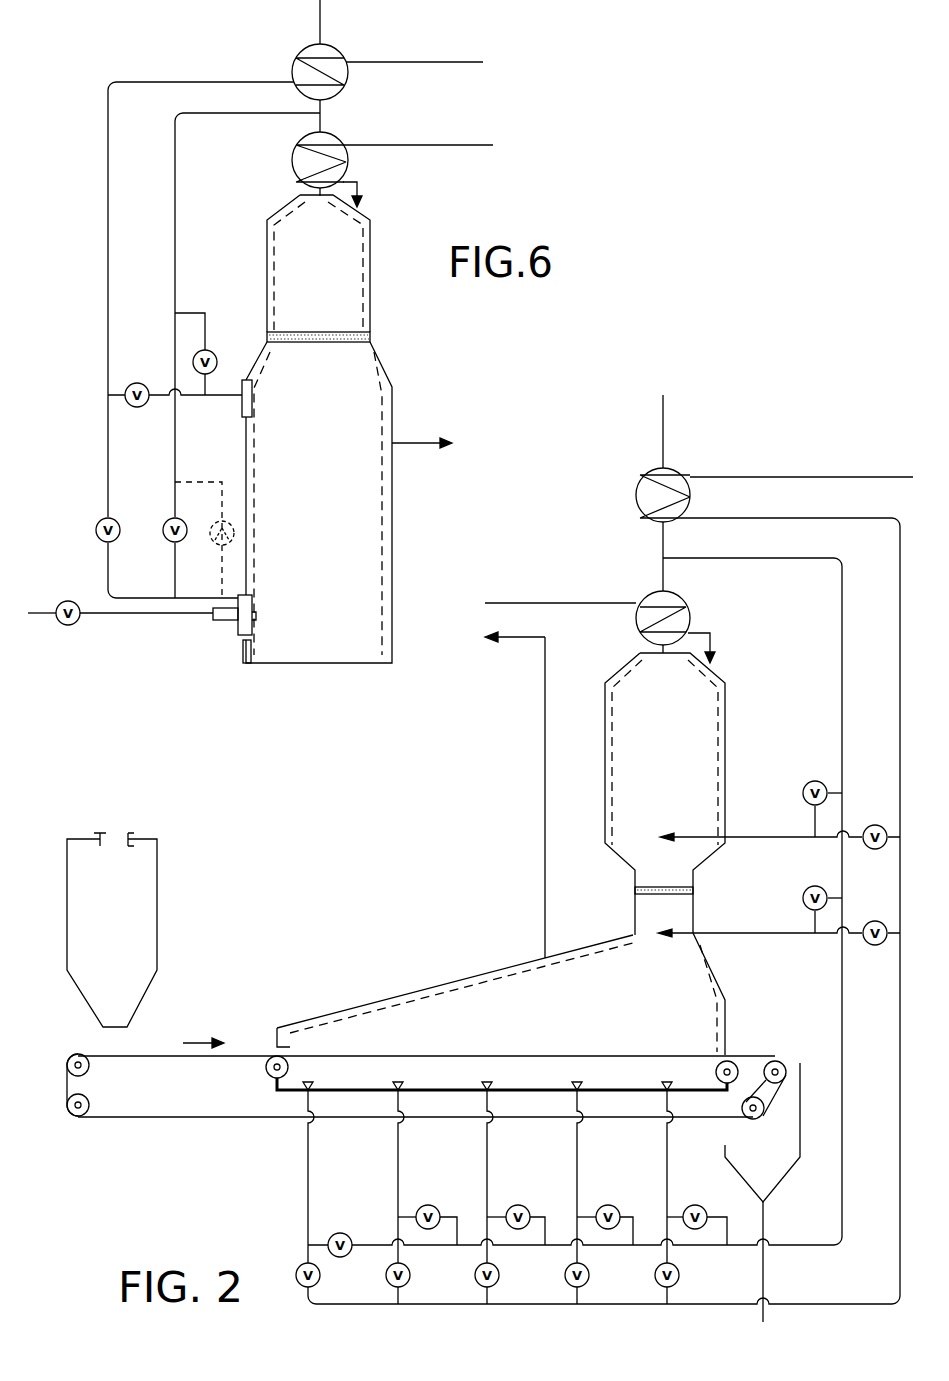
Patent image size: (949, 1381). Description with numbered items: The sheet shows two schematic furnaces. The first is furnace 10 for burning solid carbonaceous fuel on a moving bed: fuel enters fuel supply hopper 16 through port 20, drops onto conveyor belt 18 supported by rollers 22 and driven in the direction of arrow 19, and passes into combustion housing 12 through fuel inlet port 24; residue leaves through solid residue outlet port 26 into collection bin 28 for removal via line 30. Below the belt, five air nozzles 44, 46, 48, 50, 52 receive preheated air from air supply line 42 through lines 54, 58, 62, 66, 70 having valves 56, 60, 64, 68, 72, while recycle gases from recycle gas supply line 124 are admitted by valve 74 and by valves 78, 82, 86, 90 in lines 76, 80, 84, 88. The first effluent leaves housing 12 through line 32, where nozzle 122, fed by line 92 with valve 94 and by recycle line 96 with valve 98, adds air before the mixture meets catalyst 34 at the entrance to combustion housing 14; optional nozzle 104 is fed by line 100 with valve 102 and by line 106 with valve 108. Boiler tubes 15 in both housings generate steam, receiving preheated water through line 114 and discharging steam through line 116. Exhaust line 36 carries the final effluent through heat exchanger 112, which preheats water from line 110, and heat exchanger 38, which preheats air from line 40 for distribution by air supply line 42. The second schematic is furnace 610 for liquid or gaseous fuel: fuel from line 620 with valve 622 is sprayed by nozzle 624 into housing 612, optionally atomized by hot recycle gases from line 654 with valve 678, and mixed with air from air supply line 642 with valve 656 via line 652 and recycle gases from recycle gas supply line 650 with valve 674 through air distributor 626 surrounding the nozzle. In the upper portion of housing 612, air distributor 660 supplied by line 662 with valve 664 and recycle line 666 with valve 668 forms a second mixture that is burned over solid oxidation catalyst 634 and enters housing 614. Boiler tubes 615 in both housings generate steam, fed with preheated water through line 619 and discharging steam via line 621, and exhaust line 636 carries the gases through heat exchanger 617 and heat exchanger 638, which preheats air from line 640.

In FIG. 6, the furnace 610 is at (455, 373).
In FIG. 6, the heat exchanger 638 is at (300, 52).
In FIG. 6, the air line 640 is at (395, 60).
In FIG. 6, the exhaust line 636 is at (323, 108).
In FIG. 6, the air supply line 642 is at (106, 262).
In FIG. 6, the heat exchanger 617 is at (293, 170).
In FIG. 6, the line 619 is at (362, 190).
In FIG. 6, the housing 614 is at (372, 303).
In FIG. 6, the boiler tubes 615 is at (272, 258).
In FIG. 6, the solid oxidation catalyst 634 is at (372, 340).
In FIG. 6, the housing 612 is at (393, 550).
In FIG. 6, the line 621 is at (405, 442).
In FIG. 6, the recycle gas supply line 650 is at (173, 295).
In FIG. 6, the line 666 is at (208, 322).
In FIG. 6, the valve 668 is at (218, 360).
In FIG. 6, the valve 664 is at (133, 405).
In FIG. 6, the line 662 is at (190, 404).
In FIG. 6, the air distributor 660 is at (236, 432).
In FIG. 6, the valve 674 is at (170, 518).
In FIG. 6, the valve 678 is at (210, 530).
In FIG. 6, the line 654 is at (220, 584).
In FIG. 6, the valve 656 is at (95, 525).
In FIG. 6, the fuel line 620 is at (48, 610).
In FIG. 6, the valve 622 is at (66, 626).
In FIG. 6, the line 652 is at (178, 602).
In FIG. 6, the nozzle 624 is at (218, 625).
In FIG. 6, the air distributor 626 is at (243, 650).
In FIG. 2, the furnace 10 is at (397, 916).
In FIG. 2, the heat exchanger 38 is at (640, 490).
In FIG. 2, the air line 40 is at (788, 476).
In FIG. 2, the air supply line 42 is at (788, 517).
In FIG. 2, the exhaust line 36 is at (660, 576).
In FIG. 2, the recycle gas supply line 124 is at (725, 557).
In FIG. 2, the line 110 is at (576, 600).
In FIG. 2, the heat exchanger 112 is at (680, 600).
In FIG. 2, the line 114 is at (703, 636).
In FIG. 2, the line 116 is at (543, 782).
In FIG. 2, the combustion housing 14 is at (620, 675).
In FIG. 2, the boiler tubes 15 is at (610, 731).
In FIG. 2, the catalyst 34 is at (633, 890).
In FIG. 2, the line 32 is at (633, 912).
In FIG. 2, the line 106 is at (836, 790).
In FIG. 2, the valve 108 is at (803, 797).
In FIG. 2, the nozzle 104 is at (658, 837).
In FIG. 2, the line 100 is at (790, 840).
In FIG. 2, the valve 102 is at (866, 847).
In FIG. 2, the valve 98 is at (803, 896).
In FIG. 2, the line 96 is at (812, 920).
In FIG. 2, the line 92 is at (740, 936).
In FIG. 2, the valve 94 is at (868, 946).
In FIG. 2, the nozzle 122 is at (664, 932).
In FIG. 2, the combustion housing 12 is at (304, 1020).
In FIG. 2, the fuel inlet port 24 is at (275, 1042).
In FIG. 2, the fuel supply hopper 16 is at (158, 914).
In FIG. 2, the port 20 is at (107, 838).
In FIG. 2, the arrow 19 is at (200, 1040).
In FIG. 2, the conveyor belt 18 is at (135, 1056).
In FIG. 2, the rollers 22 is at (68, 1100).
In FIG. 2, the solid residue outlet port 26 is at (732, 1060).
In FIG. 2, the air inlet nozzle 44 is at (310, 1084).
In FIG. 2, the air inlet nozzle 46 is at (400, 1084).
In FIG. 2, the air inlet nozzle 48 is at (489, 1084).
In FIG. 2, the air inlet nozzle 50 is at (579, 1084).
In FIG. 2, the air inlet nozzle 52 is at (673, 1080).
In FIG. 2, the line 54 is at (306, 1170).
In FIG. 2, the line 58 is at (396, 1168).
In FIG. 2, the line 62 is at (486, 1168).
In FIG. 2, the line 66 is at (576, 1168).
In FIG. 2, the line 70 is at (666, 1168).
In FIG. 2, the valve 74 is at (334, 1234).
In FIG. 2, the valve 78 is at (430, 1205).
In FIG. 2, the line 76 is at (442, 1224).
In FIG. 2, the valve 82 is at (520, 1205).
In FIG. 2, the line 80 is at (532, 1224).
In FIG. 2, the valve 86 is at (610, 1205).
In FIG. 2, the line 84 is at (624, 1224).
In FIG. 2, the valve 90 is at (697, 1205).
In FIG. 2, the line 88 is at (710, 1222).
In FIG. 2, the collection bin 28 is at (788, 1170).
In FIG. 2, the line 30 is at (766, 1314).
In FIG. 2, the valve 56 is at (321, 1276).
In FIG. 2, the valve 60 is at (411, 1276).
In FIG. 2, the valve 64 is at (500, 1276).
In FIG. 2, the valve 68 is at (590, 1276).
In FIG. 2, the valve 72 is at (680, 1276).